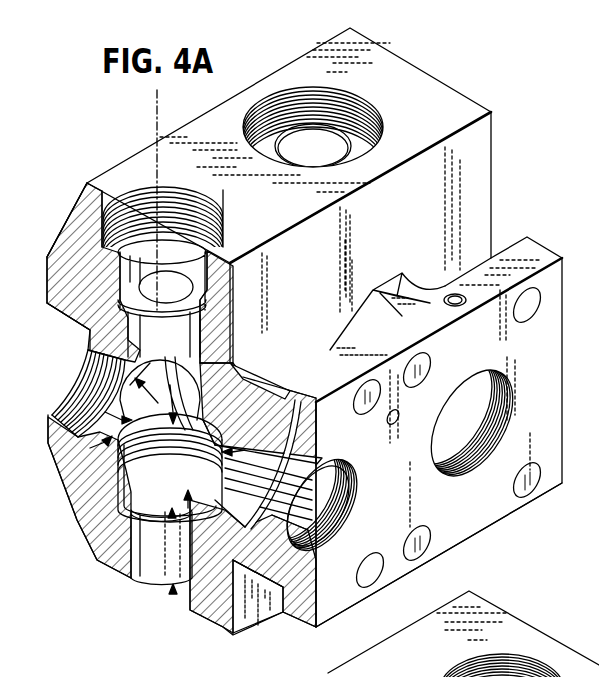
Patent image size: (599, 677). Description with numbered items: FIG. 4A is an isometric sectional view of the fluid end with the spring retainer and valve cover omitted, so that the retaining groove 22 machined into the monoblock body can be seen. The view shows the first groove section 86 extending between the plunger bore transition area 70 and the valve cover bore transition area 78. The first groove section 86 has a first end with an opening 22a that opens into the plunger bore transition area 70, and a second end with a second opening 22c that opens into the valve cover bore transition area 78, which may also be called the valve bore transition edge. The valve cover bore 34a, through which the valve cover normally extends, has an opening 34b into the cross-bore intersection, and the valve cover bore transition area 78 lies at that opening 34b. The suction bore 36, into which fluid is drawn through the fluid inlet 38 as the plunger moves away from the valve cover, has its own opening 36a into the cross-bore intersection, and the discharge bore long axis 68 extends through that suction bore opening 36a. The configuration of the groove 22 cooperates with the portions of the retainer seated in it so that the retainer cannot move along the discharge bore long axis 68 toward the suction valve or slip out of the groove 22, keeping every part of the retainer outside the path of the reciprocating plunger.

The groove 22 is at (64, 228).
The opening of first groove section 22a is at (435, 553).
The second opening of first groove section 22c is at (76, 395).
The valve cover bore 34a is at (83, 367).
The valve cover bore opening 34b is at (105, 432).
The suction bore 36 is at (170, 519).
The suction bore opening 36a is at (233, 562).
The fluid inlet 38 is at (175, 597).
The discharge bore long axis 68 is at (157, 117).
The plunger bore transition area 70 is at (268, 560).
The valve cover bore transition area 78 is at (135, 505).
The first groove section 86 is at (127, 347).